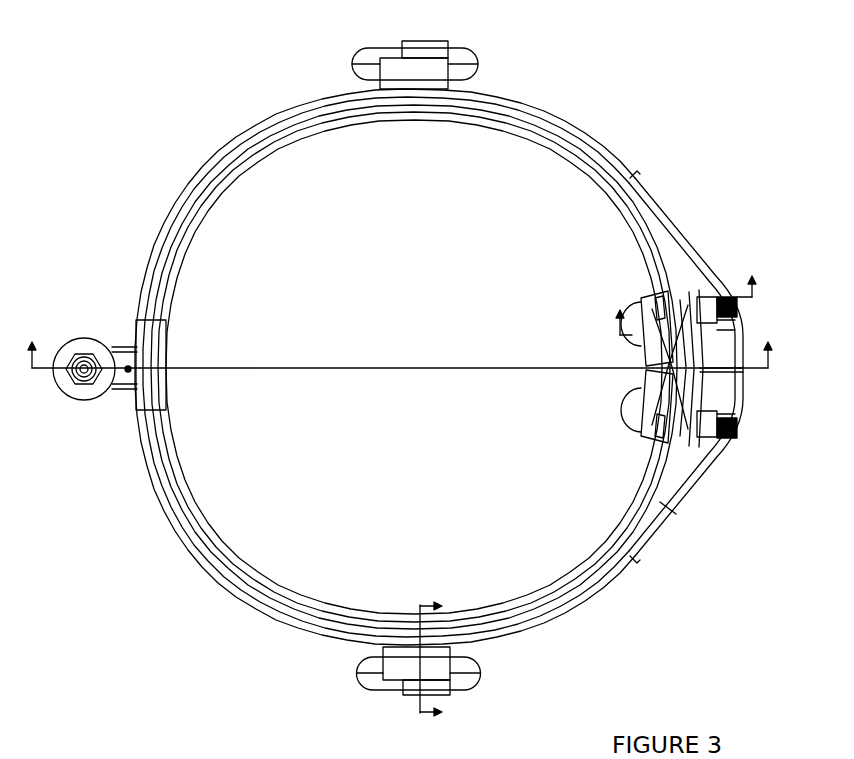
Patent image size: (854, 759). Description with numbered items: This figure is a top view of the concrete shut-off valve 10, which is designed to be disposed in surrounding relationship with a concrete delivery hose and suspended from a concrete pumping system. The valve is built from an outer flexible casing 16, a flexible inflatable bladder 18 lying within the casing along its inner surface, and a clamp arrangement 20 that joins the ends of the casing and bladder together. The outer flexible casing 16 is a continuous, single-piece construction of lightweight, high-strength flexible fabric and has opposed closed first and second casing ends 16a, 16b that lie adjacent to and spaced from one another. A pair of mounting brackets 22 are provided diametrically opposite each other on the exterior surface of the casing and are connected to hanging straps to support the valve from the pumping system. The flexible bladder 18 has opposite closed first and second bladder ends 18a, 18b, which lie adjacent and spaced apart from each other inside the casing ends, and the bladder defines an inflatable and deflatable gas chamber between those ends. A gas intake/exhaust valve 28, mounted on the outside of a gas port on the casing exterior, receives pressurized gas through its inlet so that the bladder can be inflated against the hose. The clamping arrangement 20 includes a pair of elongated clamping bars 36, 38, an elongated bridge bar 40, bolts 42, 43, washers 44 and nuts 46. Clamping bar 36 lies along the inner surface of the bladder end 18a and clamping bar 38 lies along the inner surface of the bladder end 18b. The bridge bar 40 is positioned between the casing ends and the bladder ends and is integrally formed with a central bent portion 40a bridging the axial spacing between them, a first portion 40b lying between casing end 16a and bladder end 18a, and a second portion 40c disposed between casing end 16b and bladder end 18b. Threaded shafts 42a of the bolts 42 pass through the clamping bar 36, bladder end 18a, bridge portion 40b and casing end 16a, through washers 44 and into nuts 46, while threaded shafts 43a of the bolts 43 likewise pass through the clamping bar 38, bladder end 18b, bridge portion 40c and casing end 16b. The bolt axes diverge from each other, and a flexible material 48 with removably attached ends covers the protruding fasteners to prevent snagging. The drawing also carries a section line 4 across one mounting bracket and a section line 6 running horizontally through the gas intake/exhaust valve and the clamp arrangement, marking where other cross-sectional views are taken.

The concrete shut-off valve 10 is at (652, 155).
The outer flexible casing 16 is at (572, 126).
The first casing end 16a is at (706, 378).
The second casing end 16b is at (713, 392).
The flexible inflatable bladder 18 is at (498, 128).
The first bladder end 18a is at (668, 367).
The second bladder end 18b is at (665, 392).
The clamp arrangement 20 is at (724, 334).
The mounting brackets 22 is at (470, 70).
The gas intake/exhaust valve 28 is at (70, 345).
The clamping bar 36 is at (643, 305).
The clamping bar 38 is at (660, 428).
The bridge bar 40 is at (690, 340).
The central bent portion 40a is at (665, 375).
The first portion 40b is at (657, 298).
The second portion 40c is at (650, 452).
The bolts 42 is at (628, 325).
The threaded shafts 42a is at (727, 298).
The bolts 43 is at (642, 410).
The threaded shafts 43a is at (736, 440).
The washers 44 is at (693, 292).
The nuts 46 is at (708, 300).
The flexible material 48 is at (668, 508).
The section line 4- 4 is at (431, 660).
The section line 6- 6 is at (400, 355).